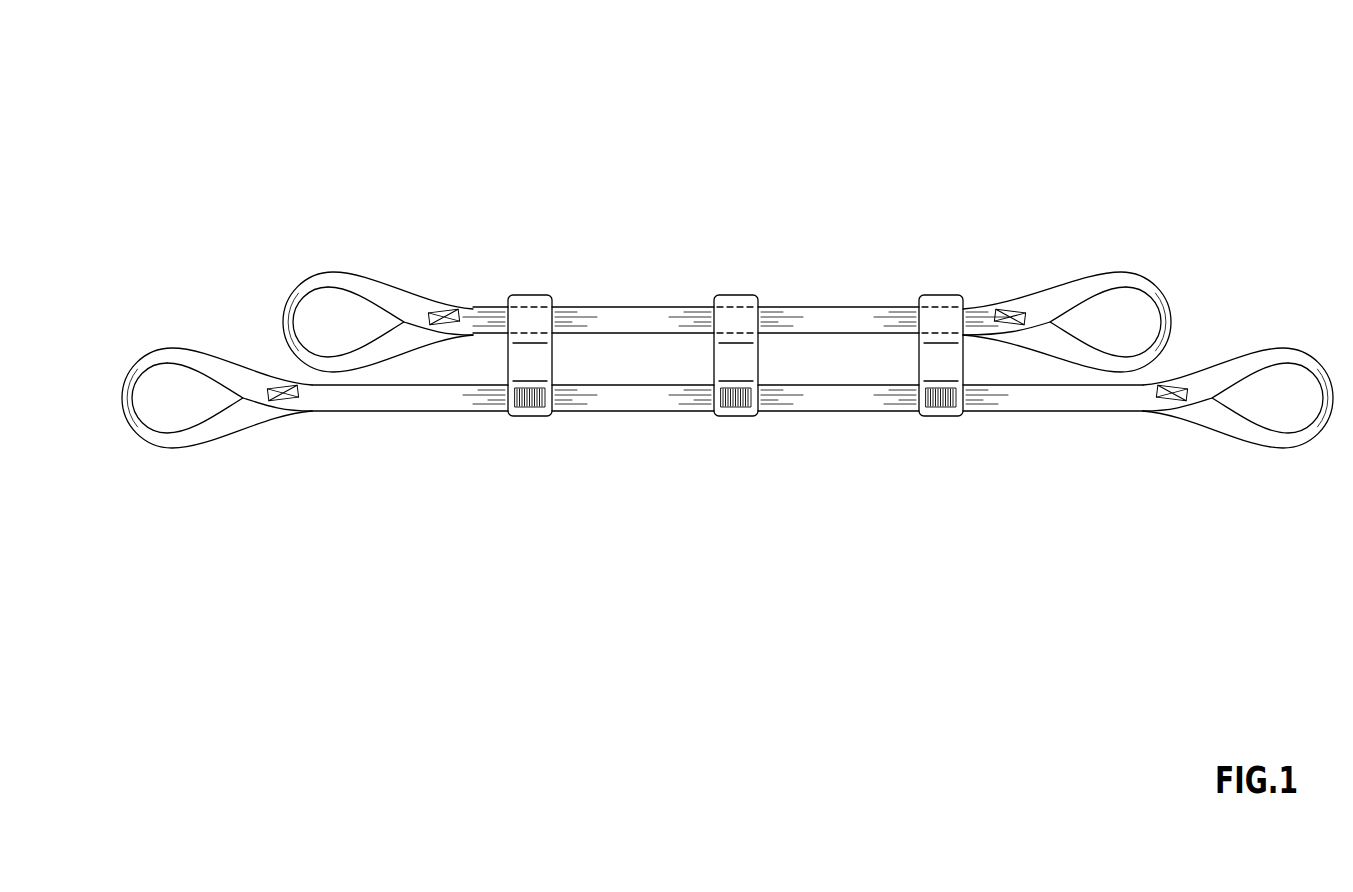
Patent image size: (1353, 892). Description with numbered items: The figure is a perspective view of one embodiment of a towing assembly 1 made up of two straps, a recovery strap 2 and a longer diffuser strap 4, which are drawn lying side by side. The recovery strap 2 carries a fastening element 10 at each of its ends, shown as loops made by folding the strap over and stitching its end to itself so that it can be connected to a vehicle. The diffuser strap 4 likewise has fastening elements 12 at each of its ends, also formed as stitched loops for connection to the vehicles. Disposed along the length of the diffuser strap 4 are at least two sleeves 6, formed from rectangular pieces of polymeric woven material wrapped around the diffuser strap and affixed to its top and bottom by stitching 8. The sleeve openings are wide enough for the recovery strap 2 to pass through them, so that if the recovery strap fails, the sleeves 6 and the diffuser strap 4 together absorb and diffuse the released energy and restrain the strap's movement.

The towing assembly 1 is at (338, 96).
The recovery strap 2 is at (903, 312).
The diffuser strap 4 is at (577, 403).
The sleeves 6 is at (736, 297).
The stitching 8 is at (947, 402).
The fastening element 10 is at (330, 278).
The fastening elements 12 is at (158, 356).